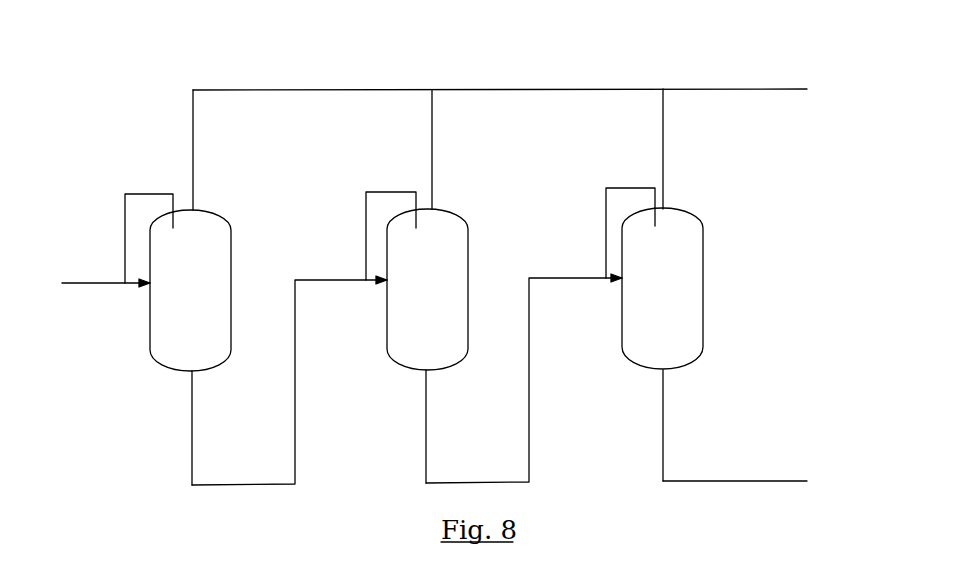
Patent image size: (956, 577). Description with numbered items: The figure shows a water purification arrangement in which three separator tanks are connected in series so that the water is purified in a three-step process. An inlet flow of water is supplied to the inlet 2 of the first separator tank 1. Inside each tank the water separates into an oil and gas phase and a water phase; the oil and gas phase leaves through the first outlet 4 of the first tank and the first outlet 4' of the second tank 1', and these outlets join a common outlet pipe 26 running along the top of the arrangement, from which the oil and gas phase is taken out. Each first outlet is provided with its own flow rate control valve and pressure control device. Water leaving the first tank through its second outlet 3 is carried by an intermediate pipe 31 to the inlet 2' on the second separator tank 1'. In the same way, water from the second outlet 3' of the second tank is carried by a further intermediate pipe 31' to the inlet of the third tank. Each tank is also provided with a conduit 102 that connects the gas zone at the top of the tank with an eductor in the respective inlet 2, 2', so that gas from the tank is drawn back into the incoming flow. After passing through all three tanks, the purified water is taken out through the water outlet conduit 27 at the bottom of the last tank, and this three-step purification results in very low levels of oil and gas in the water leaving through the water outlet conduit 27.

The separator tank 1 is at (216, 275).
The separator tank 1' is at (458, 273).
The inlet 2 is at (106, 263).
The inlet 2' is at (329, 253).
The second outlet 3 is at (213, 427).
The second outlet 3' is at (449, 426).
The first outlet 4 is at (209, 150).
The first outlet 4' is at (450, 149).
The outlet pipe 26 is at (737, 89).
The water outlet conduit 27 is at (717, 481).
The intermediate pipe 31 is at (248, 380).
The intermediate pipe 31' is at (482, 378).
The conduit 102 is at (142, 194).